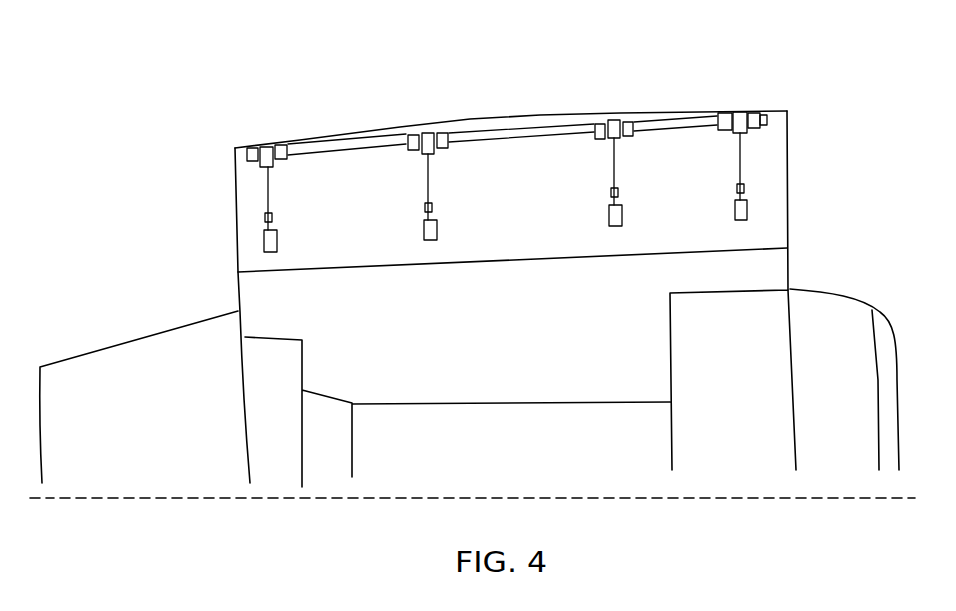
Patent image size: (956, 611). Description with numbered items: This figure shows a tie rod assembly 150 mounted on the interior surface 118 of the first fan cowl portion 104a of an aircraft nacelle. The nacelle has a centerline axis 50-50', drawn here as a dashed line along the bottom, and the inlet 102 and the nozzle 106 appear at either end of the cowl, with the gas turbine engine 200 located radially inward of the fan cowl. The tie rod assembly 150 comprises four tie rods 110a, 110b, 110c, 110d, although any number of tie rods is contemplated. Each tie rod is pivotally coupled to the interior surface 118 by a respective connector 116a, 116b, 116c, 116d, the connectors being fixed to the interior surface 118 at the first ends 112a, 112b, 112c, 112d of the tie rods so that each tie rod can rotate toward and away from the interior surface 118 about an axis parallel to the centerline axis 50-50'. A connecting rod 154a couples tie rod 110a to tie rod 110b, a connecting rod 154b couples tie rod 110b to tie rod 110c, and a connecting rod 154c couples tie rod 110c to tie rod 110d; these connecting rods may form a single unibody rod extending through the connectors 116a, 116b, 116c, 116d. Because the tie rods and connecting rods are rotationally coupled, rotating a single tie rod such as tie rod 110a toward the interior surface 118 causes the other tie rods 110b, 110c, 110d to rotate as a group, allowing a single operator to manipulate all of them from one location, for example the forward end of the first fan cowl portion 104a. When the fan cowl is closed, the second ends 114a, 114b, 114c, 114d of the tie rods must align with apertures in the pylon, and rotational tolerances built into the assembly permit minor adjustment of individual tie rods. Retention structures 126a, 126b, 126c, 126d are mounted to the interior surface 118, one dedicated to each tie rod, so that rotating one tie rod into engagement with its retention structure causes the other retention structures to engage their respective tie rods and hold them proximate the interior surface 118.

The centerline axis 50 is at (494, 468).
The centerline axis 50' is at (36, 470).
The inlet 102 is at (850, 313).
The first fan cowl portion 104a is at (533, 116).
The nozzle 106 is at (77, 363).
The tie rod 110a is at (267, 188).
The tie rod 110b is at (427, 187).
The tie rod 110c is at (613, 173).
The tie rod 110d is at (740, 165).
The first end of tie rod 112a is at (267, 163).
The first end of tie rod 112b is at (430, 150).
The first end of tie rod 112c is at (613, 137).
The first end of tie rod 112d is at (743, 132).
The second end of tie rod 114a is at (270, 244).
The second end of tie rod 114b is at (430, 240).
The second end of tie rod 114c is at (614, 227).
The second end of tie rod 114d is at (745, 221).
The connector 116a is at (250, 147).
The connector 116b is at (408, 136).
The connector 116c is at (596, 128).
The connector 116d is at (722, 120).
The interior surface 118 is at (514, 219).
The retention structure 126a is at (272, 218).
The retention structure 126b is at (428, 208).
The retention structure 126c is at (618, 193).
The retention structure 126d is at (738, 188).
The tie rod assembly 150 is at (232, 148).
The connecting rod 154a is at (337, 145).
The connecting rod 154b is at (512, 133).
The connecting rod 154c is at (692, 122).
The gas turbine engine 200 is at (500, 457).